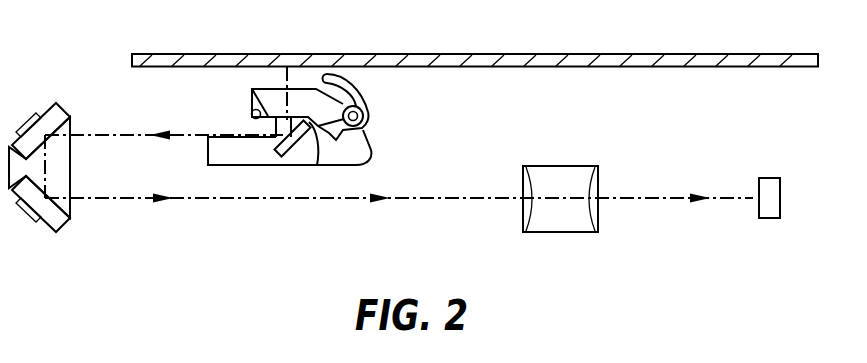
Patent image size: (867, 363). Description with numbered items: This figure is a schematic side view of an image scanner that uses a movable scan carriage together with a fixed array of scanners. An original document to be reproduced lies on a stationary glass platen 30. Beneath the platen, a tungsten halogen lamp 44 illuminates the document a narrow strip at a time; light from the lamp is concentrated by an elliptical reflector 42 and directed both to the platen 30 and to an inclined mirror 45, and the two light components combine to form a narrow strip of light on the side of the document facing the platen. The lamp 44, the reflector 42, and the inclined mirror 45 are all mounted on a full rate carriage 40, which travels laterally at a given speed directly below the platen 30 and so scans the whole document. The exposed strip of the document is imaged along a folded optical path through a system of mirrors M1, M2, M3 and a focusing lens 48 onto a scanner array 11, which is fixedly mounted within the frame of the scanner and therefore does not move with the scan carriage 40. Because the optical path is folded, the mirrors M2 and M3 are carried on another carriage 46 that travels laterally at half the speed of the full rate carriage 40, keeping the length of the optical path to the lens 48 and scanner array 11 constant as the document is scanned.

The scanner array 11 is at (768, 178).
The glass platen 30 is at (598, 52).
The full rate carriage 40 is at (232, 165).
The elliptical reflector 42 is at (358, 85).
The tungsten halogen lamp 44 is at (369, 126).
The inclined mirror 45 is at (253, 104).
The half rate carriage 46 is at (75, 207).
The focusing lens 48 is at (560, 166).
The first mirror M1 is at (303, 158).
The second mirror M2 is at (45, 107).
The third mirror M3 is at (50, 228).